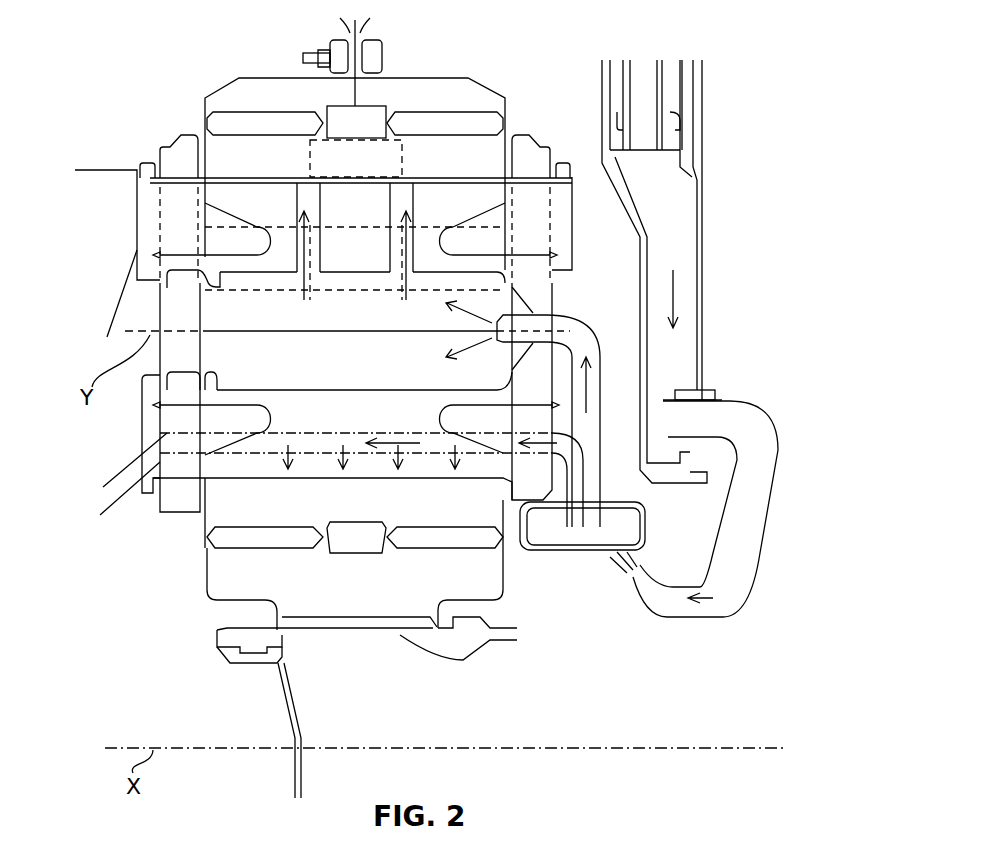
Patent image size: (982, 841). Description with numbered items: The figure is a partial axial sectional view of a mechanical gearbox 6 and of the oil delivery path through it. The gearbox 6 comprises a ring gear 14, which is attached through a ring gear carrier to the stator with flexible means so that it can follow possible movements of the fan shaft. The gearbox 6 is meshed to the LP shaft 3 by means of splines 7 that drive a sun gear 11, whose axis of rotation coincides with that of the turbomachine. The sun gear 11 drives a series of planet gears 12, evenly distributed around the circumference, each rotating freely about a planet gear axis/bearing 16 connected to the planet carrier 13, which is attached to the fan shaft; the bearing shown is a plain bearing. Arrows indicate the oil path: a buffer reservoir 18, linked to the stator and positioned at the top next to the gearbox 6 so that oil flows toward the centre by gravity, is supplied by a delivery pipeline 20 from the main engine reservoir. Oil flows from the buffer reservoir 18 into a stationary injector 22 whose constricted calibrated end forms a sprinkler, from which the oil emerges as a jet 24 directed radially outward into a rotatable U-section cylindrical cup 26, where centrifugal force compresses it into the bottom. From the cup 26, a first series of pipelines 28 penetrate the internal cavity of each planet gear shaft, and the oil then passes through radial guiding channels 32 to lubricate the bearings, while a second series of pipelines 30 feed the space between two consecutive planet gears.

The LP shaft 3 is at (462, 638).
The gearbox 6 is at (185, 45).
The splines 7 is at (330, 617).
The sun gear 11 is at (217, 570).
The planet gears 12 is at (493, 150).
The planet carrier 13 is at (181, 148).
The ring gear 14 is at (472, 107).
The planet gear axis/bearing 16 is at (347, 245).
The buffer reservoir 18 is at (697, 287).
The delivery pipeline 20 is at (683, 90).
The injector 22 is at (702, 618).
The jet 24 is at (622, 563).
The cylindrical cup 26 is at (653, 530).
The first series of pipelines 28 is at (587, 322).
The second series of pipelines 30 is at (590, 433).
The guiding channels 32 is at (397, 213).